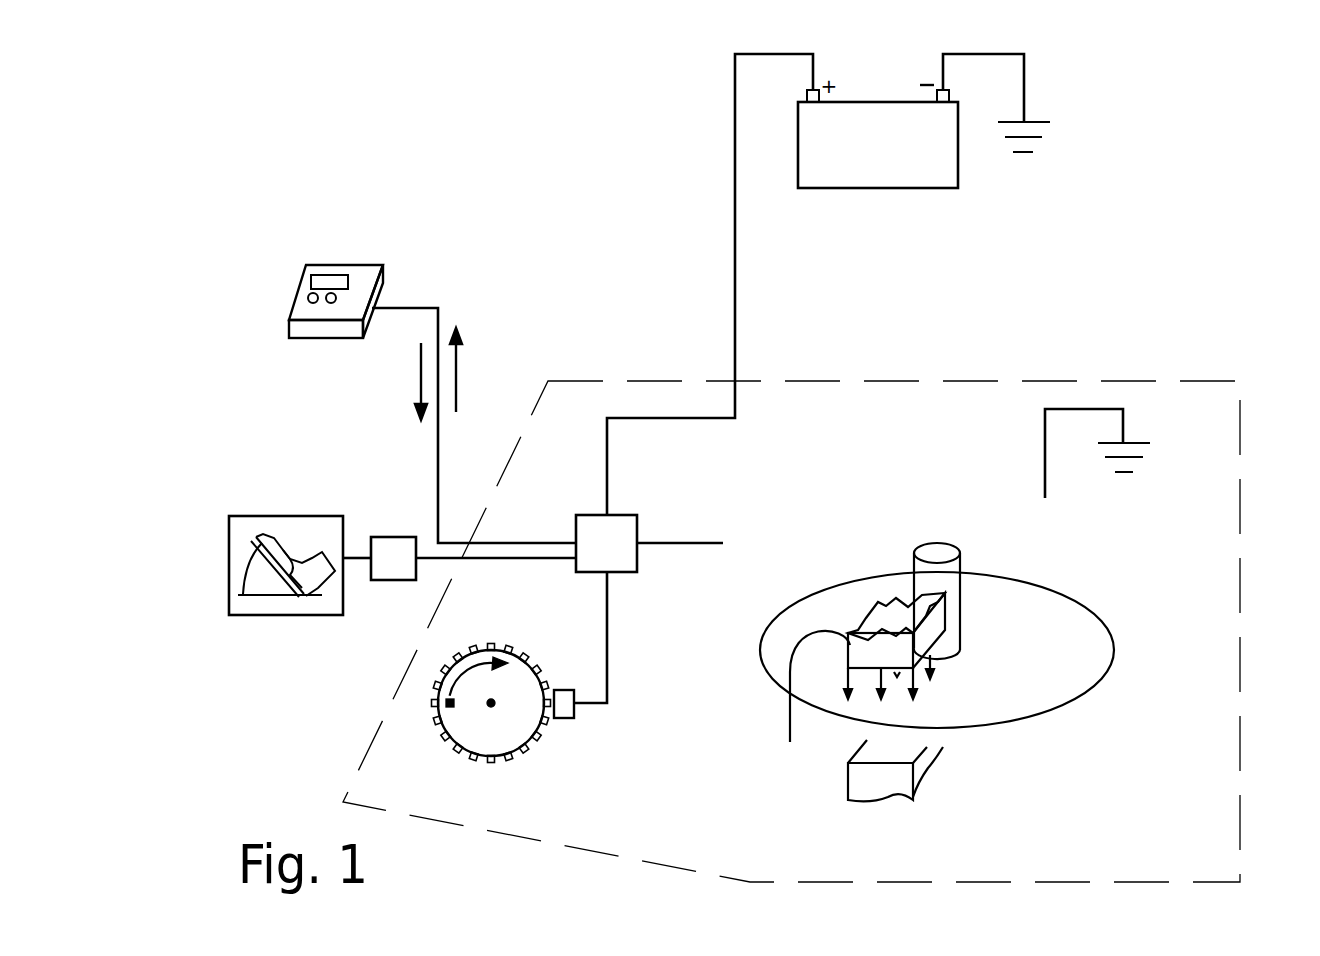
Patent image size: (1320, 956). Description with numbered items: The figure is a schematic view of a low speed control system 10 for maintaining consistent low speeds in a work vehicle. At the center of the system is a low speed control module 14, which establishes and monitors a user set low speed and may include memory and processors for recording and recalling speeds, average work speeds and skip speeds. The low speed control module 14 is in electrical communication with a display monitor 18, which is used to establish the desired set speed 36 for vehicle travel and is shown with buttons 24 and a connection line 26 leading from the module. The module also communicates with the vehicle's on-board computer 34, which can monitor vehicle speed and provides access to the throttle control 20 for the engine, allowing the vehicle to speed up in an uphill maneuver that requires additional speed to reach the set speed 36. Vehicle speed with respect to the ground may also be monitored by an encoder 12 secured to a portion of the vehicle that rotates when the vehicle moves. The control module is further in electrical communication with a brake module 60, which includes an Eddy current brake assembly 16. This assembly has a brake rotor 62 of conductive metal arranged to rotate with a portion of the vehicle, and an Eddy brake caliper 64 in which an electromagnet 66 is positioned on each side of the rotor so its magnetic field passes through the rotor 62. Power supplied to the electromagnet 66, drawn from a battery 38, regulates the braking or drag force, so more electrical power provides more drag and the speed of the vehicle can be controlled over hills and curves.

The low speed control system 10 is at (541, 262).
The encoder 12 is at (458, 748).
The low speed control module 14 is at (575, 540).
The Eddy current brake assembly 16 is at (823, 528).
The display monitor 18 is at (362, 272).
The throttle control 20 is at (273, 513).
The input buttons 24 is at (308, 298).
The output line 26 is at (640, 541).
The on-board computer 34 is at (392, 535).
The set speed 36 is at (322, 276).
The battery 38 is at (869, 168).
The brake module 60 is at (897, 378).
The brake rotor 62 is at (1080, 650).
The Eddy brake caliper 64 is at (813, 703).
The electromagnet 66 is at (960, 627).